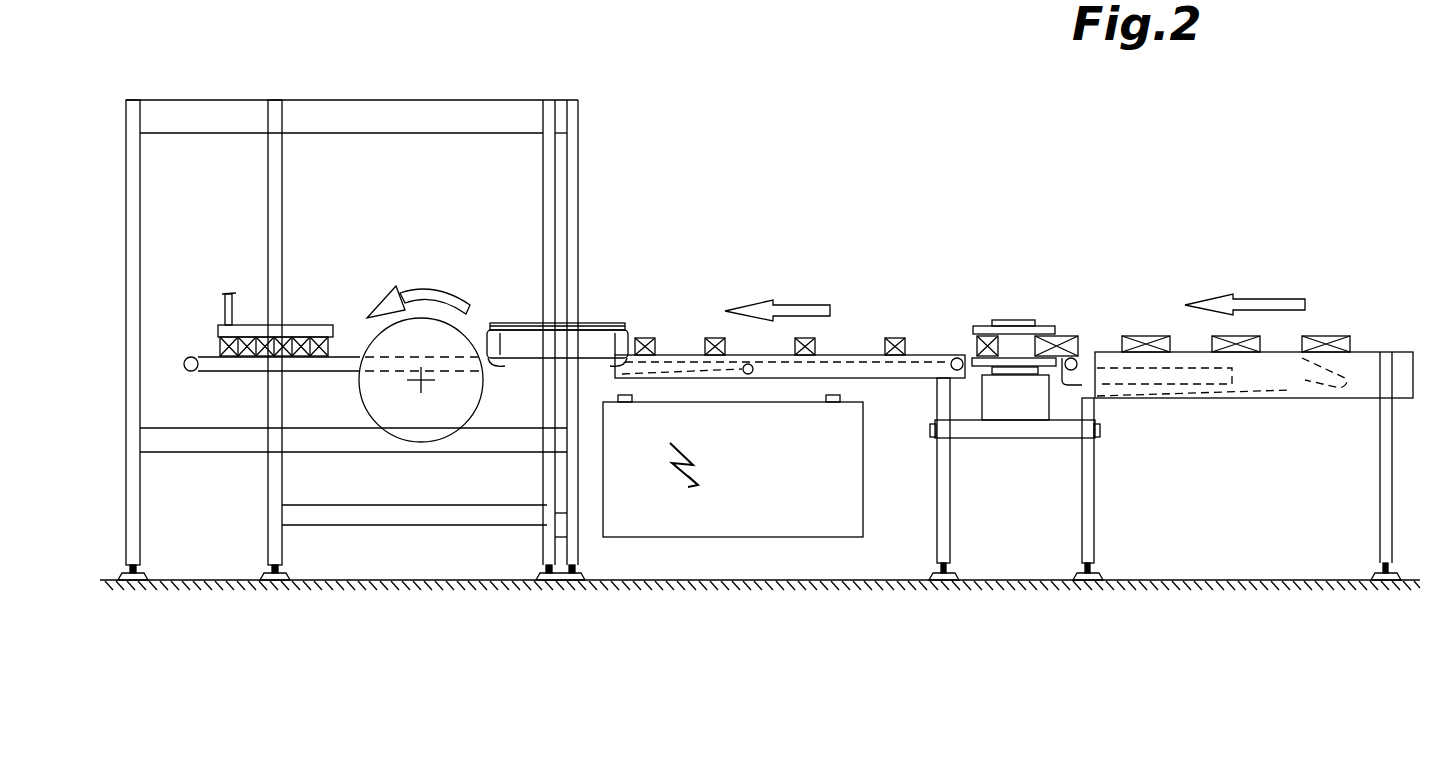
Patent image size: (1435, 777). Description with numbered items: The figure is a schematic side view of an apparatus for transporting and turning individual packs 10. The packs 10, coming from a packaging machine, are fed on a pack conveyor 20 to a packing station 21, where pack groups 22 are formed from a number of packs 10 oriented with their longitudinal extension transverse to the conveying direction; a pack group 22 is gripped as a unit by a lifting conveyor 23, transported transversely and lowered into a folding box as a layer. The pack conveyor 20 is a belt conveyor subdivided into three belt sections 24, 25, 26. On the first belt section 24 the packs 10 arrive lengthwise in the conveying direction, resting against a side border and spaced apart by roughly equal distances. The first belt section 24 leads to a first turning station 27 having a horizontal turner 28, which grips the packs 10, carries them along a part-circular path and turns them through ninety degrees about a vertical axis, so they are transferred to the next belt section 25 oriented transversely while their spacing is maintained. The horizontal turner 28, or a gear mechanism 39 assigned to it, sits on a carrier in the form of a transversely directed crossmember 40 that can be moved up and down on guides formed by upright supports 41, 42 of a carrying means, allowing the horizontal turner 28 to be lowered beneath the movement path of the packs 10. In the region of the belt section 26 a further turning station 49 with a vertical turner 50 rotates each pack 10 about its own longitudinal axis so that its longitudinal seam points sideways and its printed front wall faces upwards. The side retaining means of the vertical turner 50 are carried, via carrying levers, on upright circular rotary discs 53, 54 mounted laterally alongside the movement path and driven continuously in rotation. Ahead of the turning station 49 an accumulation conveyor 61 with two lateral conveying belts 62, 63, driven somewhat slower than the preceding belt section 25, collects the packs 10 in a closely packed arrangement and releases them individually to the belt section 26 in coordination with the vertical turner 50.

The pack 10 is at (715, 345).
The pack conveyor 20 is at (1011, 461).
The packing station 21 is at (297, 190).
The pack group 22 is at (210, 365).
The lifting conveyor 23 is at (260, 318).
The first belt section 24 is at (1210, 280).
The belt section 25 is at (860, 332).
The belt section 26 is at (335, 312).
The turning station 27 is at (1070, 320).
The horizontal turner 28 is at (975, 320).
The gear mechanism 39 is at (1005, 400).
The crossmember 40 is at (1023, 432).
The upright support 41 is at (943, 535).
The upright support 42 is at (1088, 495).
The turning station 49 is at (462, 243).
The vertical turner 50 is at (454, 506).
The rotary disc 53 is at (475, 517).
The rotary disc 54 is at (460, 402).
The accumulation conveyor 61 is at (613, 243).
The conveying belt 62 is at (615, 229).
The conveying belt 63 is at (522, 338).